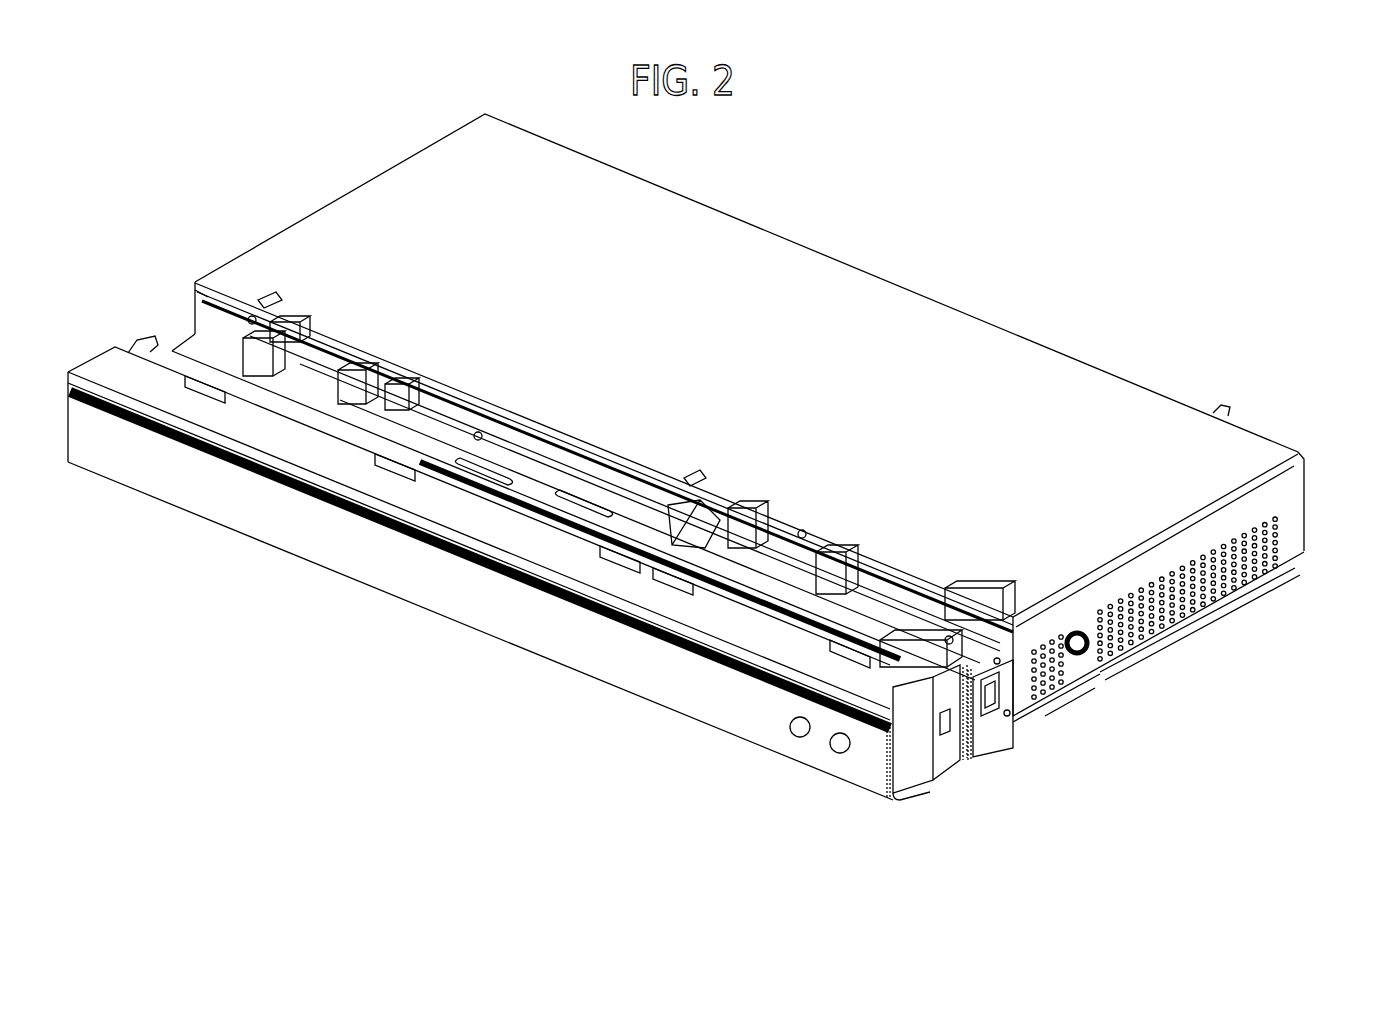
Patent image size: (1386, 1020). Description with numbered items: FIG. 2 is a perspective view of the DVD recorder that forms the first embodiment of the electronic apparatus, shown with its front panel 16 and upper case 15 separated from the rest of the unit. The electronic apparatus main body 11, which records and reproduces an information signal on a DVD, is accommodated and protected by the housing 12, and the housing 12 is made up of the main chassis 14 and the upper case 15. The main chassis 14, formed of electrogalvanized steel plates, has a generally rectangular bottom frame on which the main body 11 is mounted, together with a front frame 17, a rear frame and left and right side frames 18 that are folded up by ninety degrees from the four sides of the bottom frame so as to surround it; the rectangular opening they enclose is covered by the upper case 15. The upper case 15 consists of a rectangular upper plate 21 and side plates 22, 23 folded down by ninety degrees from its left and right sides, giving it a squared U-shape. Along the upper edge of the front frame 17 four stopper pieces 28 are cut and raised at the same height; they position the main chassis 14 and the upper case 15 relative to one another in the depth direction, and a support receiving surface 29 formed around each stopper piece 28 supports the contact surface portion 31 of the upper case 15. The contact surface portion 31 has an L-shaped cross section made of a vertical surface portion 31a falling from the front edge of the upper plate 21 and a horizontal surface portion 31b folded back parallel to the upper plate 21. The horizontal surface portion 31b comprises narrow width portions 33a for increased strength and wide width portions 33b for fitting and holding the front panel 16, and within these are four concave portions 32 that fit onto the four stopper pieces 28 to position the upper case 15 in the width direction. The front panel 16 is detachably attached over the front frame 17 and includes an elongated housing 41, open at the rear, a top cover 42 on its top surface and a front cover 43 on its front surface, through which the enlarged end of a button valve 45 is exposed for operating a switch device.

The electronic apparatus main body 11 is at (560, 517).
The housing 12 is at (1127, 697).
The main chassis 14 is at (1053, 715).
The upper case 15 is at (865, 259).
The front panel 16 is at (432, 627).
The front frame 17 is at (352, 410).
The side frames 18 is at (987, 749).
The upper plate 21 is at (978, 332).
The side plate 22 is at (1203, 612).
The side plate 23 is at (193, 294).
The stopper piece 28 is at (205, 384).
The support receiving surface 29 is at (252, 316).
The contact surface portion 31 is at (690, 427).
The vertical surface portion 31a is at (630, 459).
The horizontal surface portion 31b is at (530, 457).
The concave portion 32 is at (255, 345).
The narrow width portion 33a is at (262, 302).
The wide width portion 33b is at (323, 335).
The housing 41 is at (917, 792).
The top cover 42 is at (673, 589).
The front cover 43 is at (697, 712).
The button valve 45 is at (833, 752).